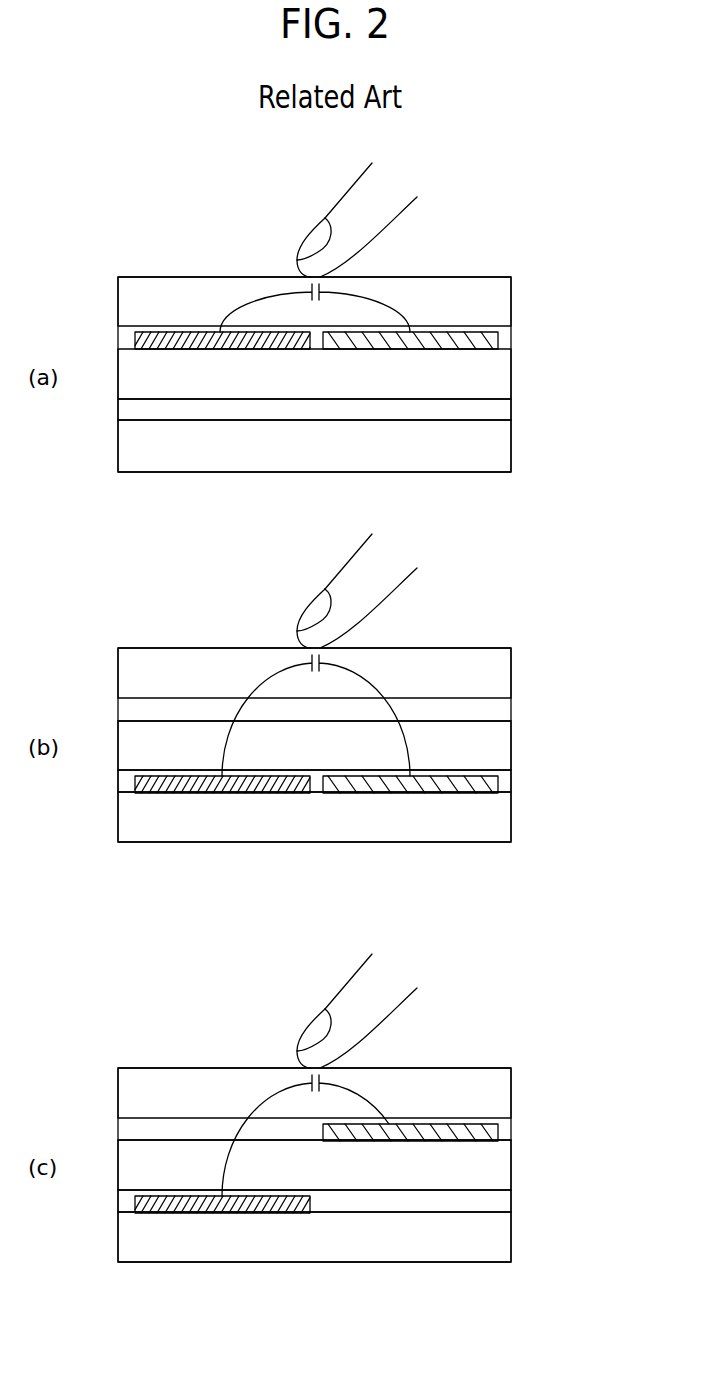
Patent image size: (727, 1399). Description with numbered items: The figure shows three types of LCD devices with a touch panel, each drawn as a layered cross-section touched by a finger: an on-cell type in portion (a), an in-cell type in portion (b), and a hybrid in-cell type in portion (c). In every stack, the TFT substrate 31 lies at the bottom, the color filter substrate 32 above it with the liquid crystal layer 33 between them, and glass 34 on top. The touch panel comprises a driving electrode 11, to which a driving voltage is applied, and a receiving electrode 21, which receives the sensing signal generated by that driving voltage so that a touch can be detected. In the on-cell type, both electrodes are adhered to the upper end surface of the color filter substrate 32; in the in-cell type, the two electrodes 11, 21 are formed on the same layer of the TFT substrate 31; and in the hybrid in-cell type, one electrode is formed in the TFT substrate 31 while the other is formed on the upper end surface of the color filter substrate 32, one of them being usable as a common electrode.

The driving electrode 11 is at (195, 332).
The receiving electrode 21 is at (455, 336).
The TFT substrate 31 is at (503, 446).
The color filter substrate 32 is at (503, 374).
The liquid crystal layer 33 is at (503, 413).
The glass 34 is at (503, 303).